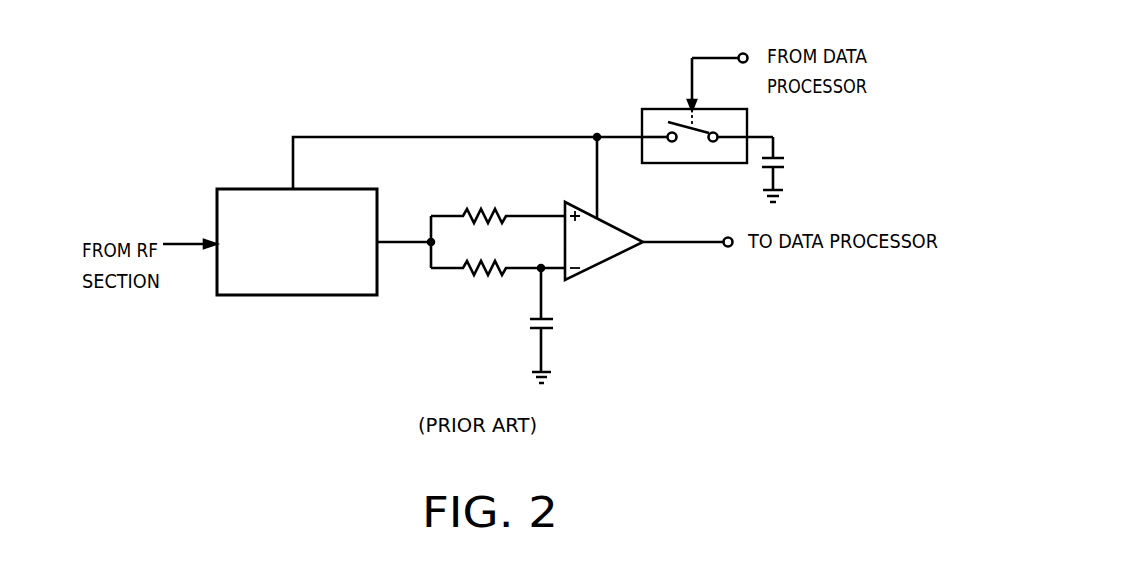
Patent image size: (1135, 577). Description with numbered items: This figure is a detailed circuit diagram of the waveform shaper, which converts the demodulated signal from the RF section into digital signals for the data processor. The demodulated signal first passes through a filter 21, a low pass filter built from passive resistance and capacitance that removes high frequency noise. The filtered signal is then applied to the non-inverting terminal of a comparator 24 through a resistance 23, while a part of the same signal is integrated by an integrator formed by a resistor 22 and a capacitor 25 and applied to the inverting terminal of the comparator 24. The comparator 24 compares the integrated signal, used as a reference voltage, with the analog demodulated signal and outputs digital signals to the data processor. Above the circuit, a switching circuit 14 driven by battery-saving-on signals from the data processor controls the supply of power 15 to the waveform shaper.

The switching circuit 14 is at (748, 118).
The power 15 is at (785, 165).
The filter 21 is at (305, 296).
The resistor 22 is at (498, 258).
The resistance 23 is at (498, 205).
The comparator 24 is at (613, 222).
The capacitor 25 is at (555, 323).